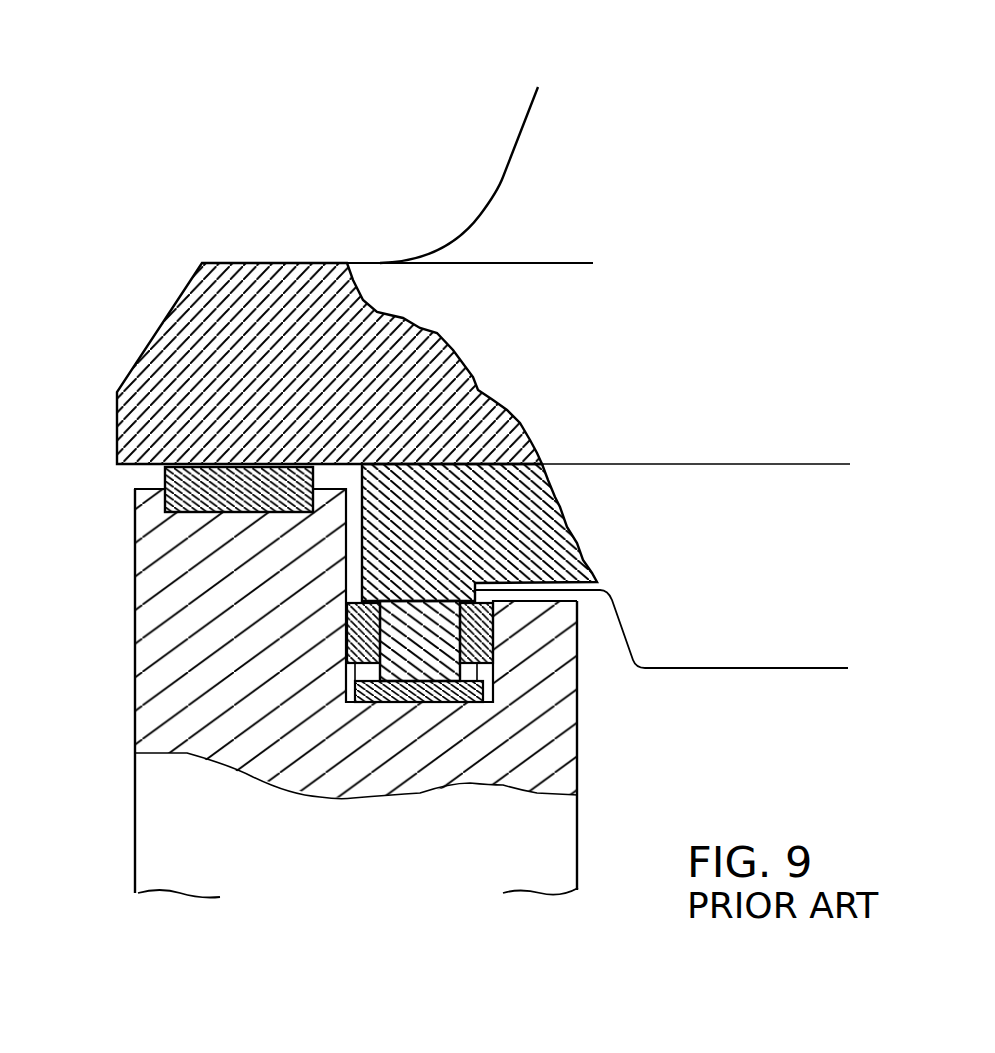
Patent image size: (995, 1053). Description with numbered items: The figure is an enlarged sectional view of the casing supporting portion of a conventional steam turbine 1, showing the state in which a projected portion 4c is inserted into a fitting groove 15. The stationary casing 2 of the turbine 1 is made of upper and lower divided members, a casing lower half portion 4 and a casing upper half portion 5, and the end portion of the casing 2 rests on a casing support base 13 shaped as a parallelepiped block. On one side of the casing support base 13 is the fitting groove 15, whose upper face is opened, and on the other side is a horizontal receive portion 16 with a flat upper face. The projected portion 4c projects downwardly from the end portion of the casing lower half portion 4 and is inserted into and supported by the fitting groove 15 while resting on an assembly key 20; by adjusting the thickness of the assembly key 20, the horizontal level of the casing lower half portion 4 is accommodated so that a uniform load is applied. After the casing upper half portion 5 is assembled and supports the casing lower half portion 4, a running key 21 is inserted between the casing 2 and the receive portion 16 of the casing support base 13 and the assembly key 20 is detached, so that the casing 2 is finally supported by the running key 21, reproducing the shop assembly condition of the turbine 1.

The turbine 1 is at (305, 148).
The casing 2 is at (527, 118).
The casing lower half portion 4 is at (713, 655).
The projected portion 4c is at (422, 650).
The casing upper half portion 5 is at (533, 187).
The casing support base 13 is at (143, 680).
The fitting groove 15 is at (483, 675).
The horizontal receive portion 16 is at (160, 490).
The assembly key 20 is at (395, 698).
The running key 21 is at (160, 546).